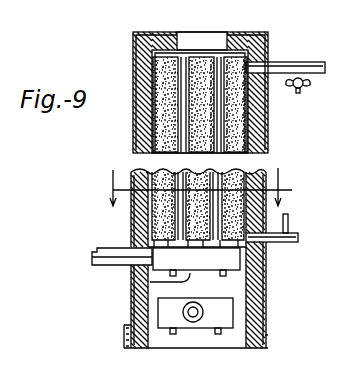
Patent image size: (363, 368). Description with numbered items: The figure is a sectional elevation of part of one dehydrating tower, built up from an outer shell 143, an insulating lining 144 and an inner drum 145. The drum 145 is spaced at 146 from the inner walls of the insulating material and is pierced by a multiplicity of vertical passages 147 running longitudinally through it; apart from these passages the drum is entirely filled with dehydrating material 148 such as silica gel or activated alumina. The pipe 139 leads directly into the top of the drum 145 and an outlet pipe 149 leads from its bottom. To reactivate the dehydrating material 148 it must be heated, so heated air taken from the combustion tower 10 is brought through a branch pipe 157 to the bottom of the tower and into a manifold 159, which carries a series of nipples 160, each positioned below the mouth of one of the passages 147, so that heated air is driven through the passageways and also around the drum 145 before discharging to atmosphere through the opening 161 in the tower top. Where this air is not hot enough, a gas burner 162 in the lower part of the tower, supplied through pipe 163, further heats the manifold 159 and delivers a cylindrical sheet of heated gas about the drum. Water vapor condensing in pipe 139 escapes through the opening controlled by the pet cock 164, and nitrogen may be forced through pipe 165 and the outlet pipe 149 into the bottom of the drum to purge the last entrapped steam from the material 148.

The combustion tower 10 is at (199, 190).
The pipe 139 is at (315, 62).
The outer shell 143 is at (270, 148).
The insulating lining 144 is at (131, 232).
The inner drum 145 is at (268, 117).
The space 146 is at (152, 131).
The passages 147 is at (220, 116).
The dehydrating material 148 is at (162, 82).
The outlet pipe 149 is at (299, 239).
The branch pipe 157 is at (100, 255).
The manifold 159 is at (150, 282).
The nipples 160 is at (222, 249).
The opening 161 is at (203, 32).
The gas burner 162 is at (235, 309).
The pipe 163 is at (183, 312).
The pet cock 164 is at (303, 87).
The pipe 165 is at (289, 221).